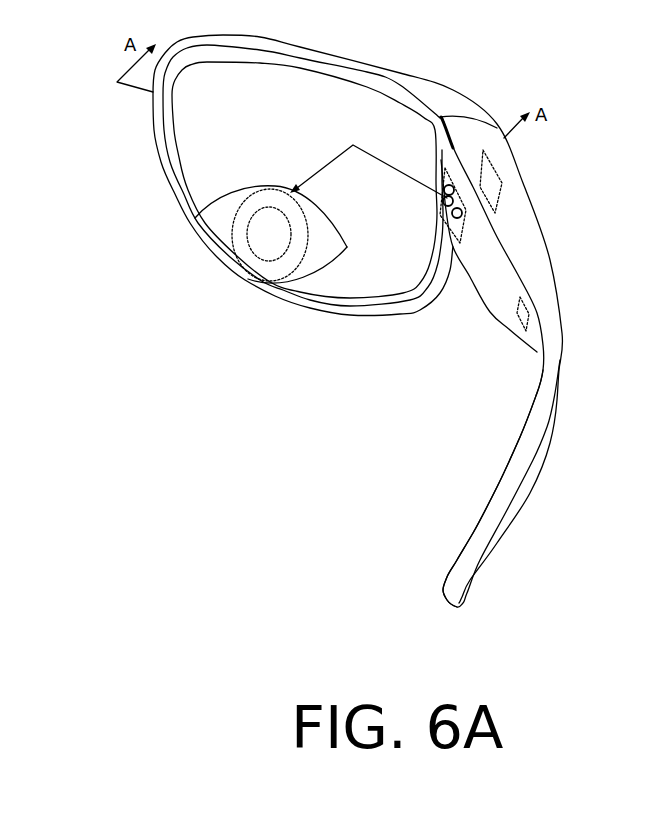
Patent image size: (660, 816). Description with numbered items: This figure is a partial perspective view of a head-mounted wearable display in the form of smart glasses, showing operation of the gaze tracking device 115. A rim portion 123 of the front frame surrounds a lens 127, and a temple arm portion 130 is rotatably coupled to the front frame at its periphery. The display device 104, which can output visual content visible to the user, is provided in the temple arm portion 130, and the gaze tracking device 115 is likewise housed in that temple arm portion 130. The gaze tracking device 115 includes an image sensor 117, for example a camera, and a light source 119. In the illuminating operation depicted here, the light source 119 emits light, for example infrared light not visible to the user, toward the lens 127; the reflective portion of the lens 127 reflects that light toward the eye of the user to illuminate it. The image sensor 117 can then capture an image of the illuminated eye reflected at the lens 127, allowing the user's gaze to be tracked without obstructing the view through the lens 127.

The display device 104 is at (523, 142).
The gaze tracking device 115 is at (462, 263).
The image sensor 117 is at (461, 216).
The light source 119 is at (453, 189).
The rim portion 123 is at (168, 168).
The lens 127 is at (183, 137).
The temple arm portion 130 is at (512, 420).